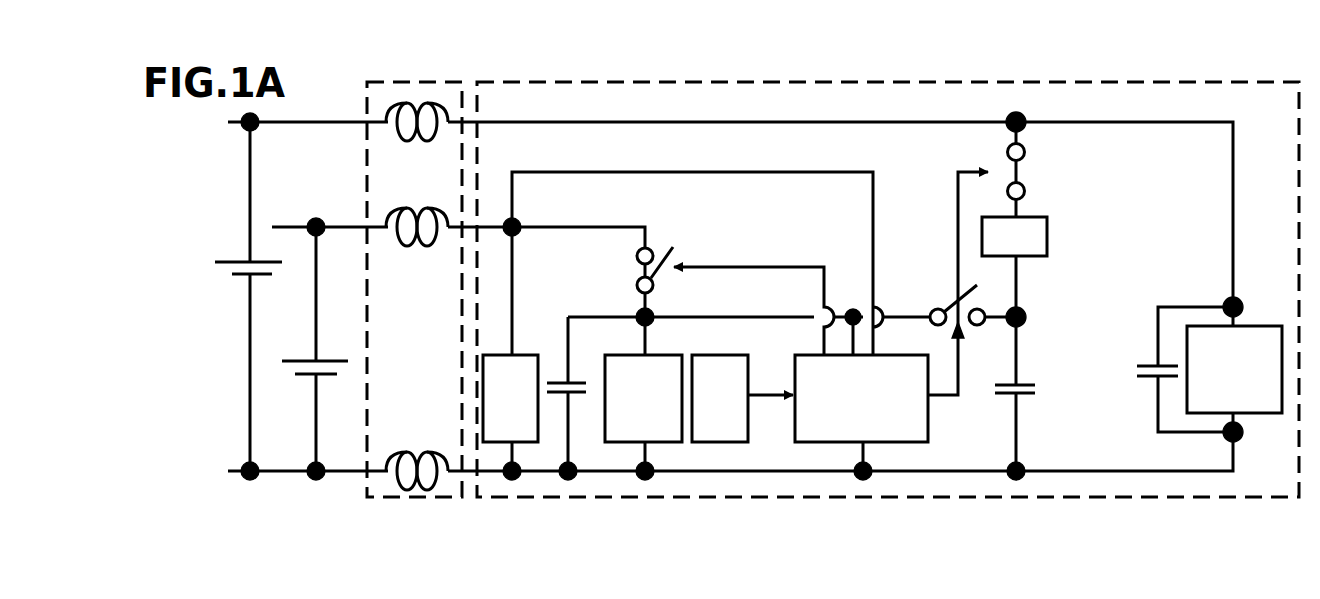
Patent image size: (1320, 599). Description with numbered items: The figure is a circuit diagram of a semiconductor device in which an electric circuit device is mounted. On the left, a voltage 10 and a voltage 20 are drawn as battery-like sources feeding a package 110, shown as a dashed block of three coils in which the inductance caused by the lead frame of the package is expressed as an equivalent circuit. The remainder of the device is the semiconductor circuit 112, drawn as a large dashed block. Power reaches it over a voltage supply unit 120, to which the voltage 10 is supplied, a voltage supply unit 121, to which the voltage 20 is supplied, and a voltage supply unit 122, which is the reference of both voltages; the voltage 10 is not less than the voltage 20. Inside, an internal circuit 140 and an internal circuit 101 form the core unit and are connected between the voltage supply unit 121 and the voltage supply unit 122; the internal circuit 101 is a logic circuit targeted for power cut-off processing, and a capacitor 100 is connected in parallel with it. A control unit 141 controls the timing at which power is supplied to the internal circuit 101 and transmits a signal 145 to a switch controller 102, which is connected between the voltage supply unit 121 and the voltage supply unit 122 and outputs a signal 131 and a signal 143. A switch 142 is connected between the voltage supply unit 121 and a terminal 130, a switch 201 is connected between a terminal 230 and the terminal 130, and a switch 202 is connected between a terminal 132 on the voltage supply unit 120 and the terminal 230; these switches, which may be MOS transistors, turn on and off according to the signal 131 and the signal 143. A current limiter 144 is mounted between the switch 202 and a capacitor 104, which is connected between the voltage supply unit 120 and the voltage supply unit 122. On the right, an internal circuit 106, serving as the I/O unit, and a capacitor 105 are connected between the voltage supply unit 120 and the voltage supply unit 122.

The voltage 10 is at (258, 273).
The voltage 20 is at (322, 373).
The package 110 is at (445, 497).
The semiconductor circuit 112 is at (1155, 497).
The voltage supply unit 120 is at (620, 122).
The voltage supply unit 121 is at (530, 222).
The voltage supply unit 122 is at (620, 472).
The terminal 130 is at (640, 305).
The capacitor 100 is at (565, 382).
The internal circuit 140 is at (522, 443).
The internal circuit 101 is at (667, 443).
The control unit 141 is at (717, 443).
The signal 145 is at (765, 398).
The switch controller 102 is at (895, 442).
The switch 142 is at (648, 250).
The signal 143 is at (745, 265).
The signal 131 is at (940, 395).
The switch 201 is at (945, 305).
The terminal 132 is at (1025, 128).
The switch 202 is at (1027, 160).
The current limiter 144 is at (1047, 235).
The terminal 230 is at (1027, 310).
The capacitor 104 is at (1025, 380).
The internal circuit 106 is at (1205, 328).
The capacitor 105 is at (1145, 375).